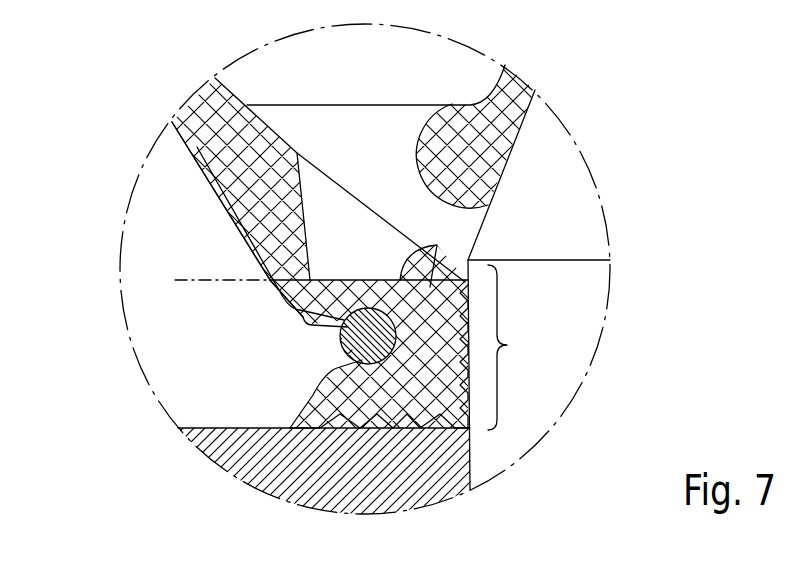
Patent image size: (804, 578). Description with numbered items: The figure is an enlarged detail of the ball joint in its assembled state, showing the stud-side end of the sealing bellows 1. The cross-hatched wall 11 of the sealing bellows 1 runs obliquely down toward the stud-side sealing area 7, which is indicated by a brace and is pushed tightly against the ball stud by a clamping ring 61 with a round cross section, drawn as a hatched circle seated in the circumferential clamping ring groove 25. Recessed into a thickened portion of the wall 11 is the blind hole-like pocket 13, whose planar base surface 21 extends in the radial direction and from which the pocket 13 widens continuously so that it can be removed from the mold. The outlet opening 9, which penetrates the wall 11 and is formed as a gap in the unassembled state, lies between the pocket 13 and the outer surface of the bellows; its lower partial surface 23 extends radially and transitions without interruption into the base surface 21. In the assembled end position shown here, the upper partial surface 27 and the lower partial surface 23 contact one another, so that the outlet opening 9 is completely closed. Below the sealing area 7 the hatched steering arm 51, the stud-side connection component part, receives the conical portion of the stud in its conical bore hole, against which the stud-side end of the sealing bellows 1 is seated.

The sealing bellows 1 is at (172, 162).
The wall 11 is at (232, 198).
The pocket 13 is at (360, 232).
The stud-side sealing area 7 is at (387, 275).
The lower partial surface 23 is at (258, 254).
The upper partial surface 27 is at (242, 275).
The outlet opening 9 is at (252, 294).
The base surface 21 is at (446, 240).
The clamping ring groove 25 is at (322, 368).
The clamping ring 61 is at (340, 337).
The steering arm 51 is at (256, 464).